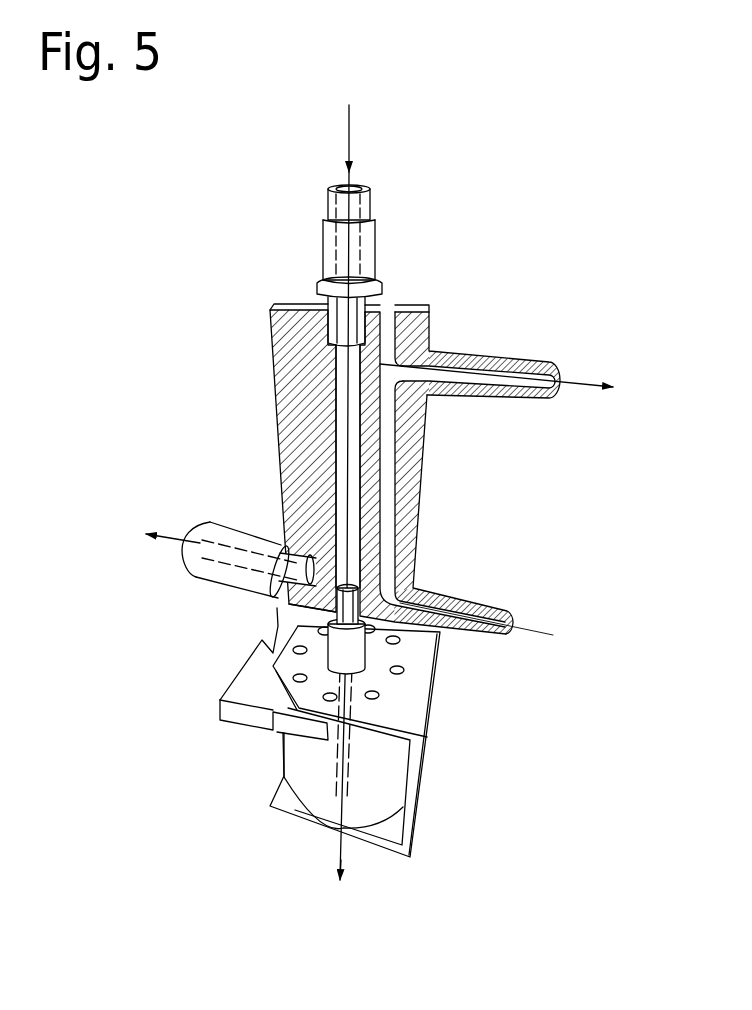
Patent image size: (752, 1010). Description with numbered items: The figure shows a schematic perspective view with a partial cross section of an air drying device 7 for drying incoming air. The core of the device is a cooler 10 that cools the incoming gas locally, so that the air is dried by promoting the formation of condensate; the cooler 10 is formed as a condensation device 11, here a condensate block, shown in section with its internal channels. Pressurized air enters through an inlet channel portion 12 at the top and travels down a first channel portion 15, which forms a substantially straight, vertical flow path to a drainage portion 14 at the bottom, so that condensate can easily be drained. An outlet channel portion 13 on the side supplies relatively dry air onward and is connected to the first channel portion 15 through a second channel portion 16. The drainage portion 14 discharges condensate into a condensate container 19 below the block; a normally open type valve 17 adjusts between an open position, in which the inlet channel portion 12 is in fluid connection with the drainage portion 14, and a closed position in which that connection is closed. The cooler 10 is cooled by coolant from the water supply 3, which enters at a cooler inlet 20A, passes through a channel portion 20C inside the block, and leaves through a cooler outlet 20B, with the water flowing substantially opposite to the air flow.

The water supply 3 is at (405, 548).
The air drying device 7 is at (468, 310).
The cooler 10 is at (428, 499).
The condensation device 11 is at (308, 432).
The inlet channel portion 12 is at (357, 182).
The outlet channel portion 13 is at (232, 550).
The drainage portion 14 is at (350, 642).
The first channel portion 15 is at (343, 368).
The second channel portion 16 is at (287, 609).
The normally open type valve 17 is at (358, 607).
The condensate container 19 is at (318, 800).
The cooler inlet 20A is at (510, 622).
The cooler outlet 20B is at (550, 372).
The channel portion 20C is at (390, 445).